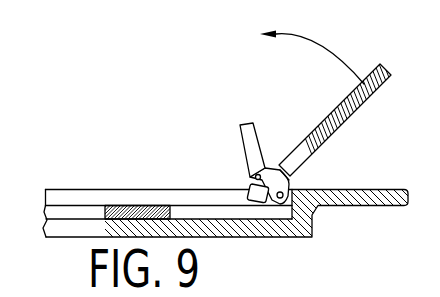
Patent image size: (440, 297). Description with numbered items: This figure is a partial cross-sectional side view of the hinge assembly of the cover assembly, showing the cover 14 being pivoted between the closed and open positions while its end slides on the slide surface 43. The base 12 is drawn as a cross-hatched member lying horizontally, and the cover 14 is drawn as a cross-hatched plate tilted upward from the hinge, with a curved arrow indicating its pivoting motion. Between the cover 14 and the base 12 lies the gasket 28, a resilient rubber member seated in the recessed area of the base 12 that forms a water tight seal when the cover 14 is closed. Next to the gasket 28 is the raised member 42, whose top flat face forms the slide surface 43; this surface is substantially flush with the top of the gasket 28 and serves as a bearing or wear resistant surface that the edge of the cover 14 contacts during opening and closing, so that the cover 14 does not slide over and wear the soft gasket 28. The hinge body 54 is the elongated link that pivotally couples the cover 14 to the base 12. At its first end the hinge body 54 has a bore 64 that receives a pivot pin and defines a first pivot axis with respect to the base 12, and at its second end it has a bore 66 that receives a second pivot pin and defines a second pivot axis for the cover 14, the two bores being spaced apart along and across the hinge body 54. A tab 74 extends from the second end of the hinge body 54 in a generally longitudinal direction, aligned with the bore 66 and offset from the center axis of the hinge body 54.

The base 12 is at (388, 180).
The cover 14 is at (328, 95).
The gasket 28 is at (128, 205).
The raised member 42 is at (225, 213).
The slide surface 43 is at (203, 205).
The hinge body 54 is at (300, 182).
The bore 64 is at (280, 198).
The bore 66 is at (244, 172).
The tab 74 is at (240, 125).